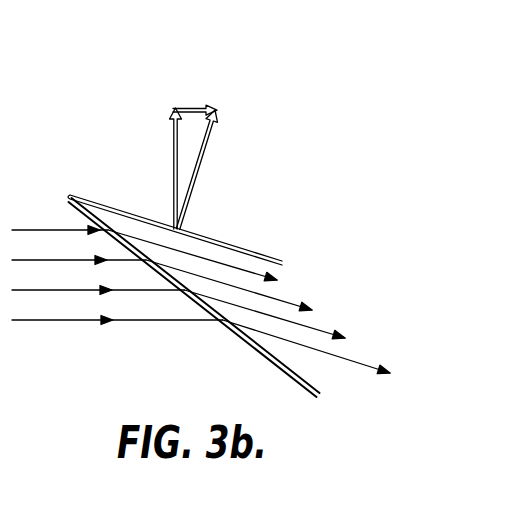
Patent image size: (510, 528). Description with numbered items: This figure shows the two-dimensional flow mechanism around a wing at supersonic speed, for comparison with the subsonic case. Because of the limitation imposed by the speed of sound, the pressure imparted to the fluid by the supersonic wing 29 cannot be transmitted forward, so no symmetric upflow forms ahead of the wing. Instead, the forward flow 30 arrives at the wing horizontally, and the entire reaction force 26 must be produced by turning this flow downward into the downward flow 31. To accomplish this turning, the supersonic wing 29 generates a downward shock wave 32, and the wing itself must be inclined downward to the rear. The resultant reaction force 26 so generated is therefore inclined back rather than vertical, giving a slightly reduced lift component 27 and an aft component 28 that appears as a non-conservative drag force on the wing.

The reaction force 26 is at (203, 157).
The lift component 27 is at (173, 154).
The aft component 28 is at (195, 62).
The supersonic wing 29 is at (237, 245).
The forward flow 30 is at (75, 320).
The downward flow 31 is at (347, 360).
The downward shock wave 32 is at (267, 357).